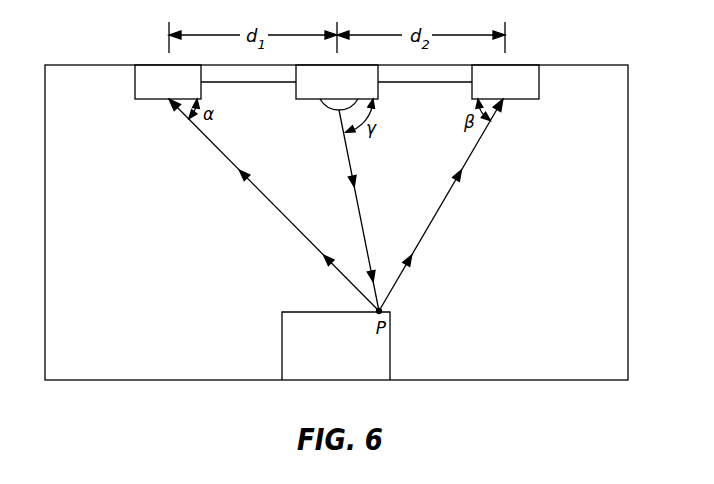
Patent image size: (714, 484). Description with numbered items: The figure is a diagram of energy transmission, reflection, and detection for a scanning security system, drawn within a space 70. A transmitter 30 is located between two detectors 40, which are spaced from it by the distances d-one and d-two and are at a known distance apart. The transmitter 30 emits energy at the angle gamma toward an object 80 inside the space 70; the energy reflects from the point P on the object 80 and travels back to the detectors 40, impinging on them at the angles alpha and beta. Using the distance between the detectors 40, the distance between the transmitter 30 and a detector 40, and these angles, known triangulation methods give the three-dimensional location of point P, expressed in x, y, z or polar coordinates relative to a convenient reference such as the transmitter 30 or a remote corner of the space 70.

The transmitter 30 is at (326, 92).
The detector 40 is at (156, 92).
The space 70 is at (524, 304).
The object 80 is at (322, 363).